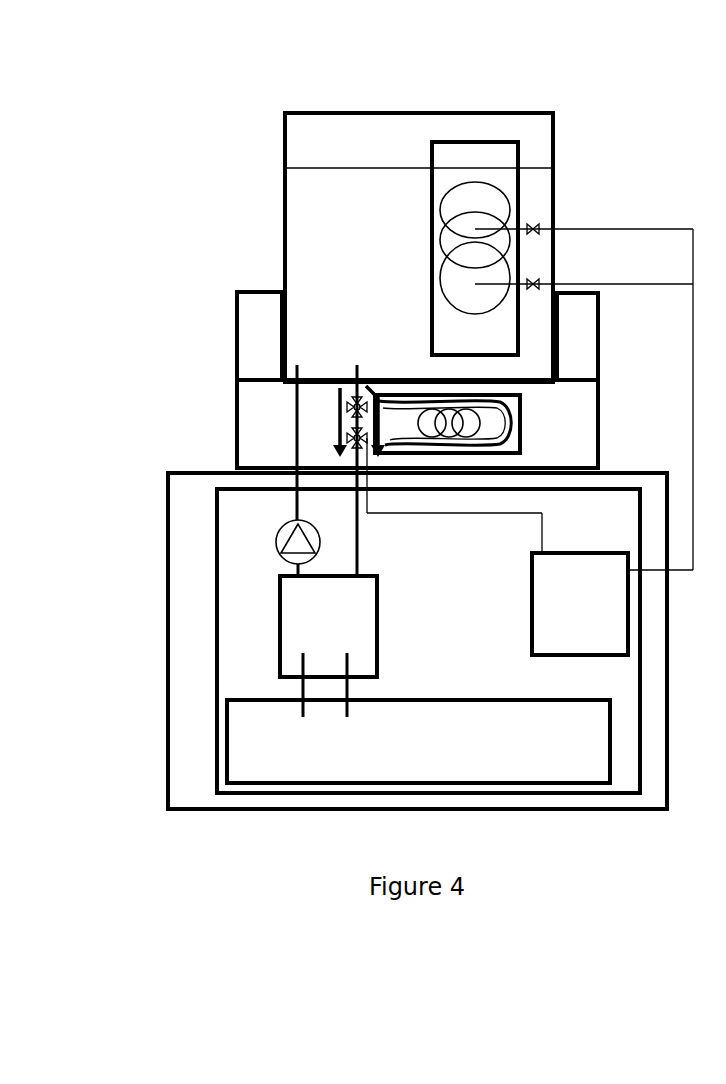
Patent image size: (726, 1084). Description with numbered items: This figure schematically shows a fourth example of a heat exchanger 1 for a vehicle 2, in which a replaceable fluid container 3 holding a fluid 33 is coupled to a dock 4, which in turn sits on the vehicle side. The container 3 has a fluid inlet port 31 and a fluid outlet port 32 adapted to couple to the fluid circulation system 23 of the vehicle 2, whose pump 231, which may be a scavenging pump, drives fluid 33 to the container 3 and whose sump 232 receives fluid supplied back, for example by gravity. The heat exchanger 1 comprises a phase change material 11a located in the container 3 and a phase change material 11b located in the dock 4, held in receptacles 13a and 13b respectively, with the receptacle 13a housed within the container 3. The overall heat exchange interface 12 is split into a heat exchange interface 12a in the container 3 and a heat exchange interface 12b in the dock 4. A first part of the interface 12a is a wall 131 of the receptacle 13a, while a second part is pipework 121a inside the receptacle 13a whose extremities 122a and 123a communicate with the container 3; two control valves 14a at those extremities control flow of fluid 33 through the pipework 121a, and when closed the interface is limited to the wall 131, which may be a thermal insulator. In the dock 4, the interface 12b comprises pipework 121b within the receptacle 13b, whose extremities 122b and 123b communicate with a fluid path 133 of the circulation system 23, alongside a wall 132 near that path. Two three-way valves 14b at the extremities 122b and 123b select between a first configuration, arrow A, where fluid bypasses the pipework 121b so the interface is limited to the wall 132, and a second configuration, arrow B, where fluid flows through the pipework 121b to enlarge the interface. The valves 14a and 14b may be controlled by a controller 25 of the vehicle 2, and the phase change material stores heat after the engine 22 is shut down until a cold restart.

The heat exchanger 1 is at (248, 273).
The vehicle 2 is at (210, 512).
The replaceable fluid container 3 is at (318, 160).
The dock 4 is at (565, 463).
The fluid 33 is at (306, 206).
The phase change material 11a is at (451, 170).
The phase change material 11b is at (442, 398).
The heat exchange interface 12 is at (503, 183).
The heat exchange interface 12a is at (430, 255).
The heat exchange interface 12b is at (507, 408).
The pipework 121a is at (437, 288).
The pipework 121b is at (503, 427).
The extremity 122a is at (533, 227).
The extremity 123a is at (533, 283).
The extremity 122b is at (366, 400).
The extremity 123b is at (363, 450).
The receptacle 13a is at (463, 140).
The receptacle 13b is at (517, 455).
The wall 131 is at (428, 190).
The wall 132 is at (473, 422).
The fluid path 133 is at (352, 393).
The control valve 14a is at (540, 228).
The three-way valve 14b is at (362, 397).
The engine 22 is at (261, 640).
The fluid circulation system 23 is at (272, 658).
The controller 25 is at (559, 617).
The fluid inlet port 31 is at (295, 382).
The fluid outlet port 32 is at (340, 387).
The pump 231 is at (297, 541).
The sump 232 is at (250, 753).